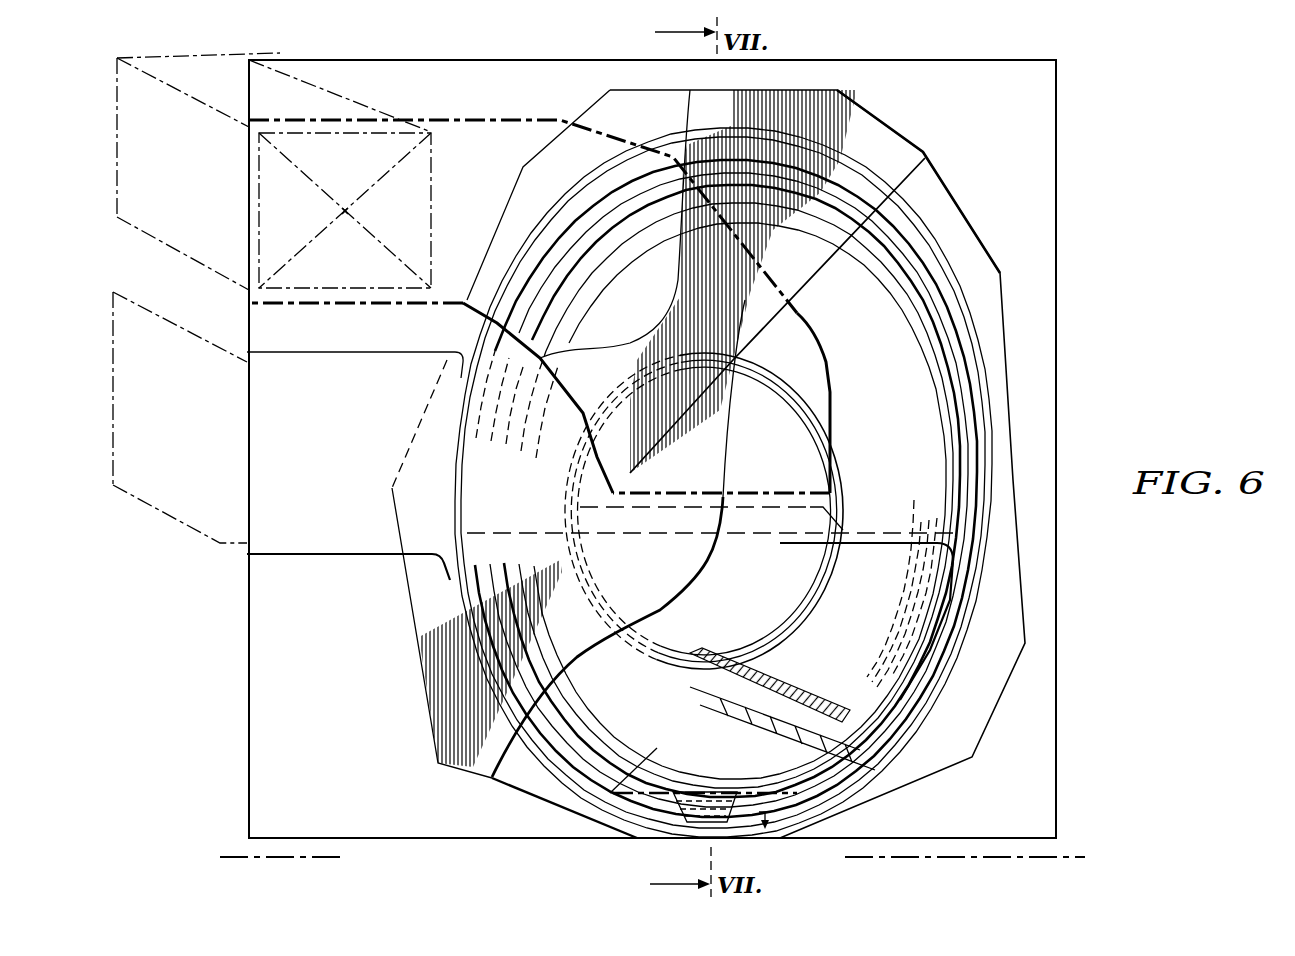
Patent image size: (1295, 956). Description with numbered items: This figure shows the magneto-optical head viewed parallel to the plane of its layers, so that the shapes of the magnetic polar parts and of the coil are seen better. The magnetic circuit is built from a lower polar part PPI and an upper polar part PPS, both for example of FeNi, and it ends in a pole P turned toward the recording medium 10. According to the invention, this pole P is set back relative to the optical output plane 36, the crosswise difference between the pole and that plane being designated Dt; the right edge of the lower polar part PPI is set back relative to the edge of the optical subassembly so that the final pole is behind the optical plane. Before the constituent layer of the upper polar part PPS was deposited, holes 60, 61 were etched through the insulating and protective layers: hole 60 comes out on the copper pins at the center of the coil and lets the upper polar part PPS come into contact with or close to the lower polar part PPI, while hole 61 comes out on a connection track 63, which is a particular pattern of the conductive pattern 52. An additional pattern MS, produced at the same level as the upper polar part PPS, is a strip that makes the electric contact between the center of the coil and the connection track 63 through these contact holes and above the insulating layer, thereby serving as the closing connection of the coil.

The recording medium 10 is at (1062, 857).
The output plane 36 is at (483, 838).
The connection layer pattern 52 is at (902, 279).
The opening 60 is at (835, 505).
The opening 61 is at (305, 222).
The connection track 63 is at (130, 148).
The additional pattern MS is at (554, 121).
The upper polar part PPS is at (880, 700).
The lower polar part PPI is at (657, 748).
The pole P is at (705, 823).
The crosswise difference Dt is at (765, 840).